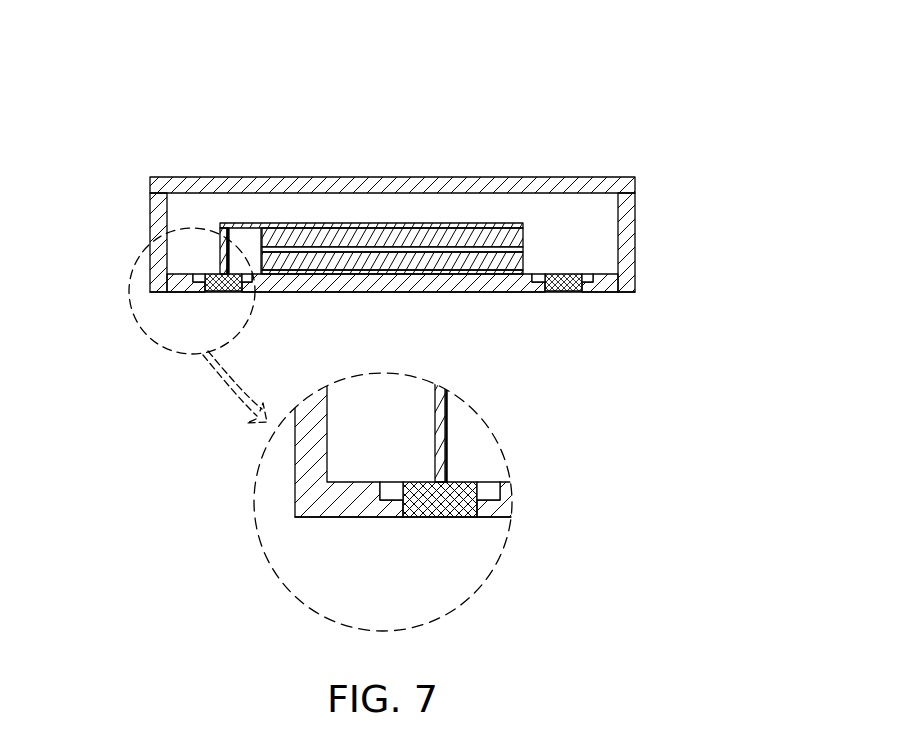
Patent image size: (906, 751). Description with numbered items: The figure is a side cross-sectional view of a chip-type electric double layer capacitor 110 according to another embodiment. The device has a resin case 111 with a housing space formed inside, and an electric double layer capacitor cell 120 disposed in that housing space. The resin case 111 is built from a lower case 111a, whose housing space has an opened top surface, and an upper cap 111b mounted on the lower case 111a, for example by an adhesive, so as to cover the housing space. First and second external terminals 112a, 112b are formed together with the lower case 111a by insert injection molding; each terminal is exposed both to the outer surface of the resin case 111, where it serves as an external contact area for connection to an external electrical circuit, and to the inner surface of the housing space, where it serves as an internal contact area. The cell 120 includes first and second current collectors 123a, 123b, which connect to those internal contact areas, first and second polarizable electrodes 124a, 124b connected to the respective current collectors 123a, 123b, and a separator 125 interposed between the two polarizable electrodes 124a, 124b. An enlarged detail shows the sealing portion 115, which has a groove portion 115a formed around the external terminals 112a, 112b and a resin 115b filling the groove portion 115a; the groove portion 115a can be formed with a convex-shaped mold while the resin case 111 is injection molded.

The chip-type electric double layer capacitor 110 is at (80, 128).
The resin case 111 is at (745, 177).
The lower case 111a is at (633, 226).
The upper cap 111b is at (633, 181).
The first external terminal 112a is at (477, 503).
The second external terminal 112b is at (565, 293).
The sealing portion 115 is at (597, 402).
The groove portion 115a is at (489, 484).
The resin 115b is at (497, 490).
The electric double layer capacitor cell 120 is at (376, 221).
The first current collector 123a is at (220, 252).
The second current collector 123b is at (490, 273).
The first polarizable electrode 124a is at (242, 240).
The second polarizable electrode 124b is at (410, 262).
The separator 125 is at (345, 252).